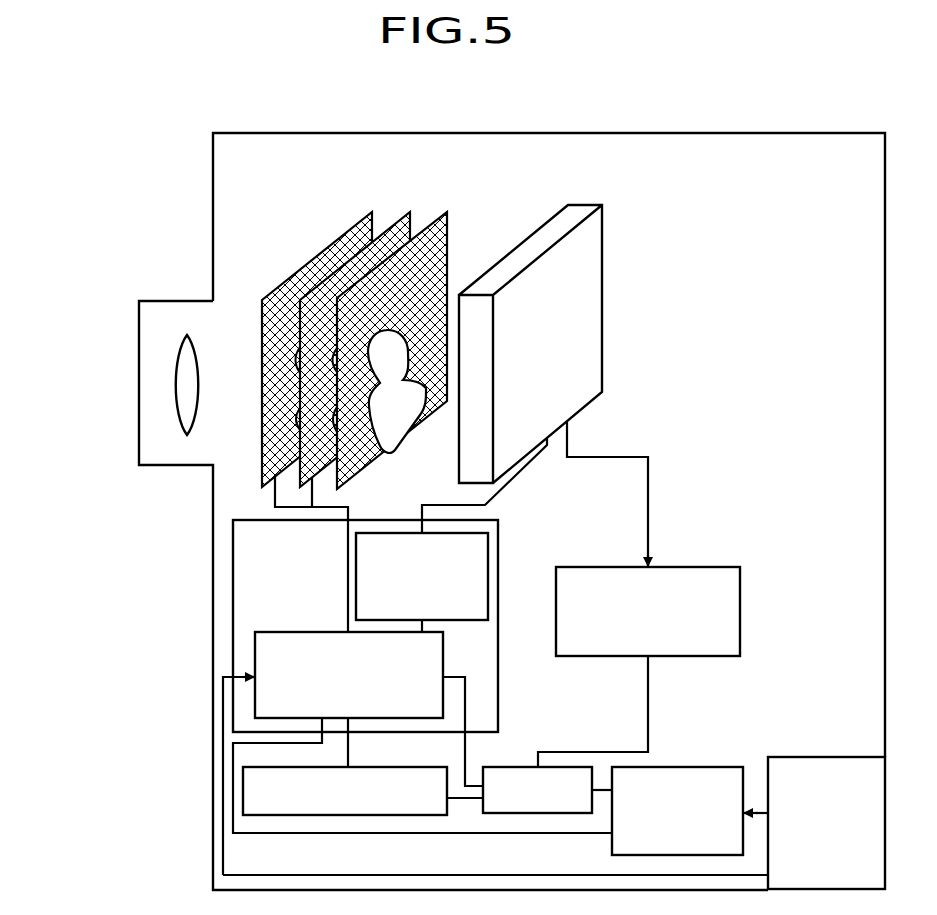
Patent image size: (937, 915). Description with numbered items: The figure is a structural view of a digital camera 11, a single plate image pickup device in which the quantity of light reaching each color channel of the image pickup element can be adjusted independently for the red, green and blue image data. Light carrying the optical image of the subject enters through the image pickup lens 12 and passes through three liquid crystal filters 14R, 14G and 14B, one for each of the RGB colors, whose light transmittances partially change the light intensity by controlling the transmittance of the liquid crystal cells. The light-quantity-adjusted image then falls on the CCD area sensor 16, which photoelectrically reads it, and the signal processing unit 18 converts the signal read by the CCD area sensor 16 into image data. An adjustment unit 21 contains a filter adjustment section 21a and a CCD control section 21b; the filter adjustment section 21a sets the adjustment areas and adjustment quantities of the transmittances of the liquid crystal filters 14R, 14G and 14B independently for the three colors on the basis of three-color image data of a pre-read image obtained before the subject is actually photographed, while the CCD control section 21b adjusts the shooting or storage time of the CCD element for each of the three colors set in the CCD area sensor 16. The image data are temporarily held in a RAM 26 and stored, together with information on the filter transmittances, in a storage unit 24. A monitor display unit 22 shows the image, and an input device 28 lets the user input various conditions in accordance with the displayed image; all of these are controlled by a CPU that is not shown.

The digital camera 11 is at (172, 178).
The image pickup lens 12 is at (190, 340).
The liquid crystal filter 14R is at (262, 322).
The liquid crystal filter 14G is at (412, 230).
The liquid crystal filter 14B is at (447, 286).
The CCD area sensor 16 is at (602, 325).
The signal processing unit 18 is at (685, 567).
The adjustment unit 21 is at (233, 548).
The filter adjustment section 21a is at (292, 632).
The CCD control section 21b is at (490, 543).
The monitor display unit 22 is at (680, 767).
The storage unit 24 is at (352, 815).
The RAM 26 is at (510, 813).
The input device 28 is at (837, 757).